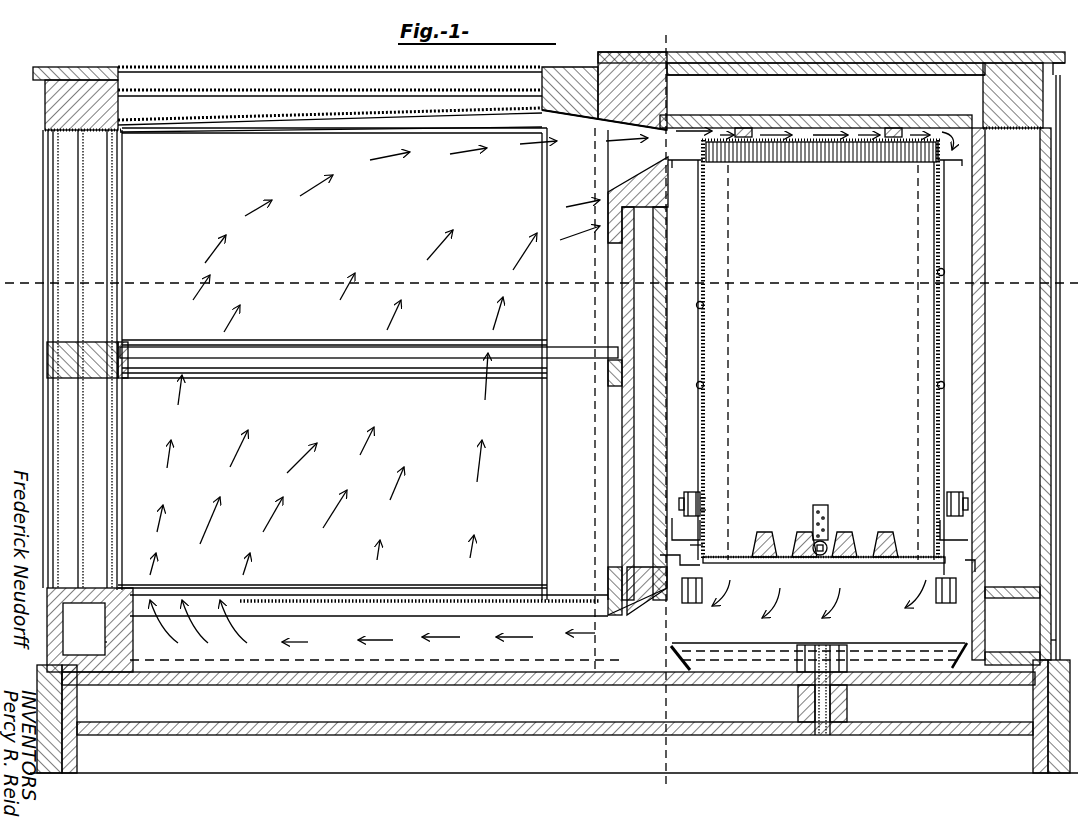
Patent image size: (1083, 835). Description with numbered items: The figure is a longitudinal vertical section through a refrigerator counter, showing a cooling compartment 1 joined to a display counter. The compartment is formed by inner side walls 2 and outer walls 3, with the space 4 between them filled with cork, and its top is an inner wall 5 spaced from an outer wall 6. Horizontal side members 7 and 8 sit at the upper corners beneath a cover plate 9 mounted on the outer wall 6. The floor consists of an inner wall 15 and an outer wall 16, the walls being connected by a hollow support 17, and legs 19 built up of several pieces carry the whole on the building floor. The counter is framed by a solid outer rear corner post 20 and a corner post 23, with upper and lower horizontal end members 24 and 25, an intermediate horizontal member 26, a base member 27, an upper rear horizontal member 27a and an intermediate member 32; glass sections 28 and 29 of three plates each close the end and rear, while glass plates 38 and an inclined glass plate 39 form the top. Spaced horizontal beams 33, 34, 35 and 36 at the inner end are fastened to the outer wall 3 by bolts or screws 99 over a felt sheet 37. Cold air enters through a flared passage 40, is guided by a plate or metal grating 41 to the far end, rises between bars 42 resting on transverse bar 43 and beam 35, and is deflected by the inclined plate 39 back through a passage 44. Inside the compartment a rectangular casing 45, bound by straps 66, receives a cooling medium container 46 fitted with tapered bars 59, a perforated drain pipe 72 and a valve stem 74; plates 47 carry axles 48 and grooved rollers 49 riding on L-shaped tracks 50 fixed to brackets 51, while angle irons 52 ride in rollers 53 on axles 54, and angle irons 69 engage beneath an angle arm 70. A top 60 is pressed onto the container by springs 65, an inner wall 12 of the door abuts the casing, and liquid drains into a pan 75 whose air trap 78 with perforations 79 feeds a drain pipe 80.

The cooling compartment 1 is at (953, 400).
The inner side walls 2 is at (658, 325).
The outer walls 3 is at (540, 311).
The space 4 is at (682, 780).
The inner wall 5 is at (843, 125).
The outer wall 6 is at (872, 76).
The horizontal side member 7 is at (646, 80).
The horizontal side member 8 is at (1014, 75).
The cover plate 9 is at (797, 58).
The inner wall of the door 12 is at (1052, 640).
The inner wall of the floor 15 is at (744, 685).
The outer wall of the floor 16 is at (770, 735).
The hollow support 17 is at (1040, 593).
The legs 19 is at (58, 774).
The outer rear corner post 20 is at (118, 241).
The corner post 23 is at (560, 187).
The upper horizontal end member 24 is at (85, 86).
The lower horizontal end member 25 is at (55, 606).
The intermediate horizontal member 26 is at (47, 364).
The base member 27 is at (355, 630).
The upper rear horizontal member 27a is at (448, 134).
The glass sections 28 is at (107, 200).
The glass sections 29 is at (343, 375).
The intermediate member 32 is at (440, 372).
The horizontal beam 33 is at (608, 70).
The horizontal beam 34 is at (625, 226).
The horizontal beam 35 is at (608, 380).
The horizontal beam 36 is at (608, 591).
The felt sheet 37 is at (622, 306).
The glass plates 38 is at (256, 92).
The inclined glass plate 39 is at (212, 122).
The passage 40 is at (618, 633).
The plate or metal grating 41 is at (400, 600).
The bars 42 is at (330, 350).
The transverse bar 43 is at (128, 357).
The passage 44 is at (659, 145).
The rectangular casing 45 is at (945, 418).
The cooling medium container 46 is at (824, 351).
The plates 47 is at (700, 492).
The axles 48 is at (679, 505).
The grooved rollers 49 is at (704, 500).
The L-shaped tracks 50 is at (700, 526).
The brackets 51 is at (662, 556).
The angle irons 52 is at (700, 548).
The rollers 53 is at (703, 600).
The axles 54 is at (819, 595).
The longitudinal tapered bars 59 is at (773, 545).
The top 60 is at (802, 163).
The springs 65 is at (743, 128).
The straps 66 is at (822, 329).
The angle irons 69 is at (696, 168).
The angle arm 70 is at (966, 164).
The perforated drain pipe 72 is at (826, 505).
The stem 74 is at (827, 541).
The pan 75 is at (866, 651).
The air trap 78 is at (818, 648).
The perforations 79 is at (846, 683).
The drain pipe 80 is at (822, 736).
The bolts or screws 99 is at (603, 203).